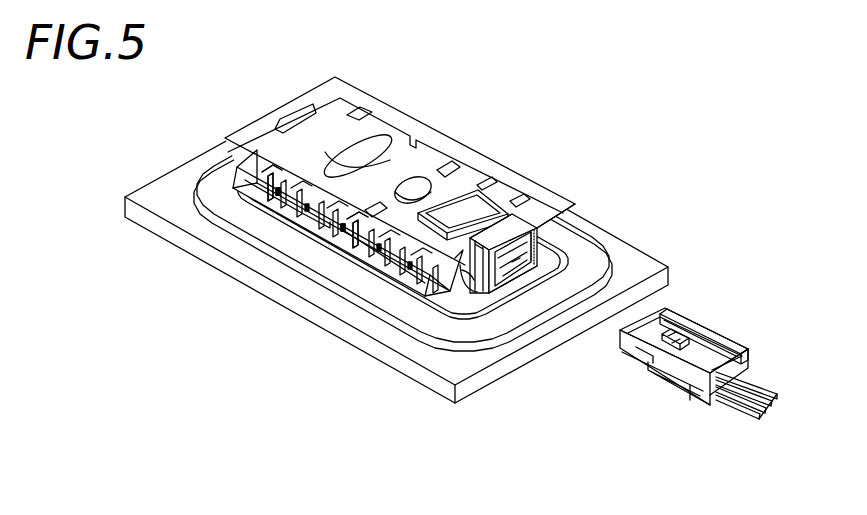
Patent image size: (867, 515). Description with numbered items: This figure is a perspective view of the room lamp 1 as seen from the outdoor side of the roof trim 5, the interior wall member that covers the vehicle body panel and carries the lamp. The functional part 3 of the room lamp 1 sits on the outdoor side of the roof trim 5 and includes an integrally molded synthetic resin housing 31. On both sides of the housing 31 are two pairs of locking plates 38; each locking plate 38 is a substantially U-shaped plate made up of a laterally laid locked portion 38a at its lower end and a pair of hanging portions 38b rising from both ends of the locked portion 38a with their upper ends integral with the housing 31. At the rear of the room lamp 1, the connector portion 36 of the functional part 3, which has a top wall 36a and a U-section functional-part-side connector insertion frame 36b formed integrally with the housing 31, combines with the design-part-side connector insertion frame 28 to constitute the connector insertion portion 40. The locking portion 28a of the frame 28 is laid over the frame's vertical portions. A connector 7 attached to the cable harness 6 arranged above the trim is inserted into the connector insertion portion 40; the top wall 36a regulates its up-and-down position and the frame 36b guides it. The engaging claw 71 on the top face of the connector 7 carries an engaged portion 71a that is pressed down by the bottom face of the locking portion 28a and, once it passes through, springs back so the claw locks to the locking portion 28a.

The room lamp 1 is at (647, 166).
The functional part 3 is at (466, 143).
The roof trim 5 is at (236, 128).
The cable harness 6 is at (735, 399).
The connector 7 is at (727, 321).
The design-part-side connector insertion frame 28 is at (430, 192).
The locking portion 28a is at (470, 240).
The housing 31 is at (382, 137).
The connector portion 36 is at (500, 192).
The top wall 36a is at (464, 186).
The functional-part-side connector insertion frame 36b is at (513, 264).
The locking plate 38 is at (330, 236).
The locked portion 38a is at (352, 238).
The hanging portion 38b is at (305, 233).
The connector insertion portion 40 is at (556, 275).
The engaging claw 71 is at (673, 327).
The engaged portion 71a is at (691, 324).